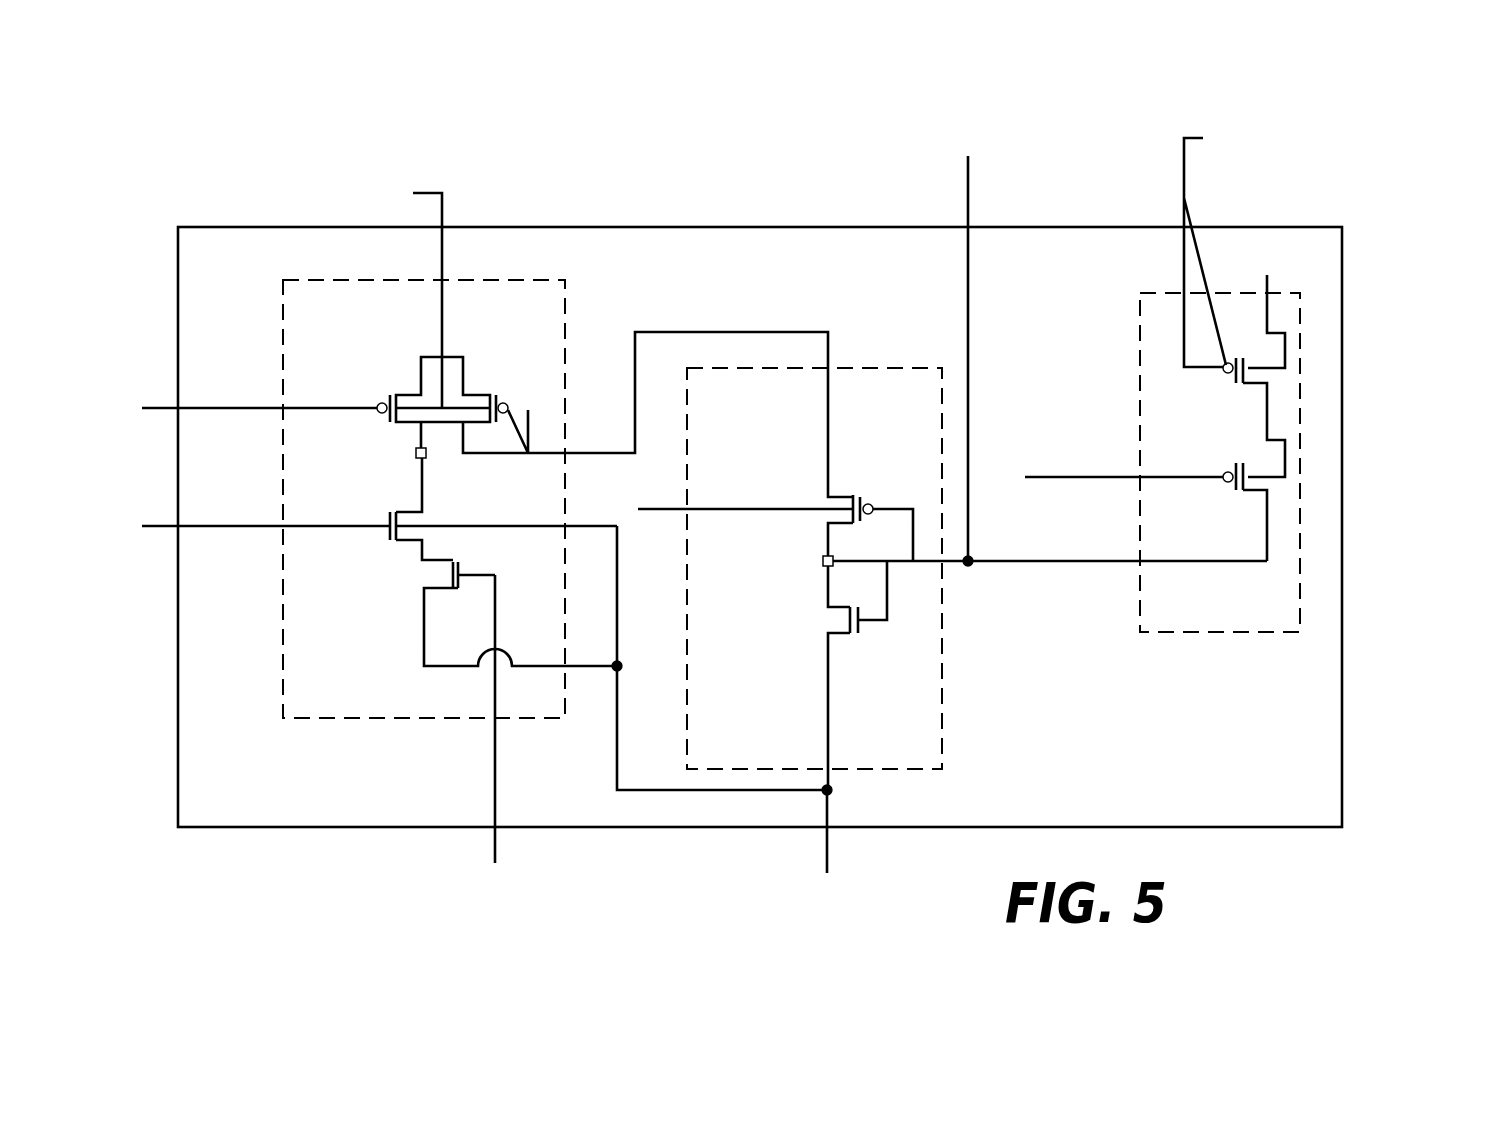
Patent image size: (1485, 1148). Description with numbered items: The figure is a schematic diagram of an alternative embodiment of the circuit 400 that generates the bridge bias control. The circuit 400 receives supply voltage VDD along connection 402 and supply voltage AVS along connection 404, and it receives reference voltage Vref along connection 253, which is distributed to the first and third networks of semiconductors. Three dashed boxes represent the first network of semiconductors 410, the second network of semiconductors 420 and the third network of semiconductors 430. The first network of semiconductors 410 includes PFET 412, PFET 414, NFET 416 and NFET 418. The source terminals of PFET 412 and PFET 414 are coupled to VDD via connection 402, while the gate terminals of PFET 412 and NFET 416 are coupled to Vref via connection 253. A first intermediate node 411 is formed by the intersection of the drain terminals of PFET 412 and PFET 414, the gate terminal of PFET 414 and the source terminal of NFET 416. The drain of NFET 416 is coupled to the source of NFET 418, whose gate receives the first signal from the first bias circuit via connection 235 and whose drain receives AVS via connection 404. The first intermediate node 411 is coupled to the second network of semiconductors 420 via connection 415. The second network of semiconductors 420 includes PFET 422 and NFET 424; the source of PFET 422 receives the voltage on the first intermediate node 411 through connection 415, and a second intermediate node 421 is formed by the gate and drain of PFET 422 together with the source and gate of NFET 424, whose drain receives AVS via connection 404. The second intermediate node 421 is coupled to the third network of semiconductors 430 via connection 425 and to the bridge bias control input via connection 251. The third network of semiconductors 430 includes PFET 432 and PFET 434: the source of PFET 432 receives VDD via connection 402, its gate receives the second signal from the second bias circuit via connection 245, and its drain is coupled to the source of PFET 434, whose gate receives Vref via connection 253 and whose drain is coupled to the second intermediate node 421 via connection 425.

The circuit 400 is at (672, 227).
The connection 402 is at (442, 192).
The connection 404 is at (843, 800).
The first network of semiconductors 410 is at (340, 714).
The first intermediate node 411 is at (410, 453).
The PFET 412 is at (404, 372).
The PFET 414 is at (478, 372).
The connection 415 is at (685, 332).
The NFET 416 is at (402, 504).
The NFET 418 is at (468, 558).
The second network of semiconductors 420 is at (743, 764).
The second intermediate node 421 is at (813, 561).
The PFET 422 is at (841, 484).
The NFET 424 is at (842, 650).
The connection 425 is at (1012, 560).
The third network of semiconductors 430 is at (1202, 624).
The PFET 432 is at (1246, 393).
The PFET 434 is at (1251, 507).
The connection 235 is at (495, 790).
The connection 245 is at (1186, 198).
The connection 251 is at (968, 215).
The connection 253 is at (266, 411).